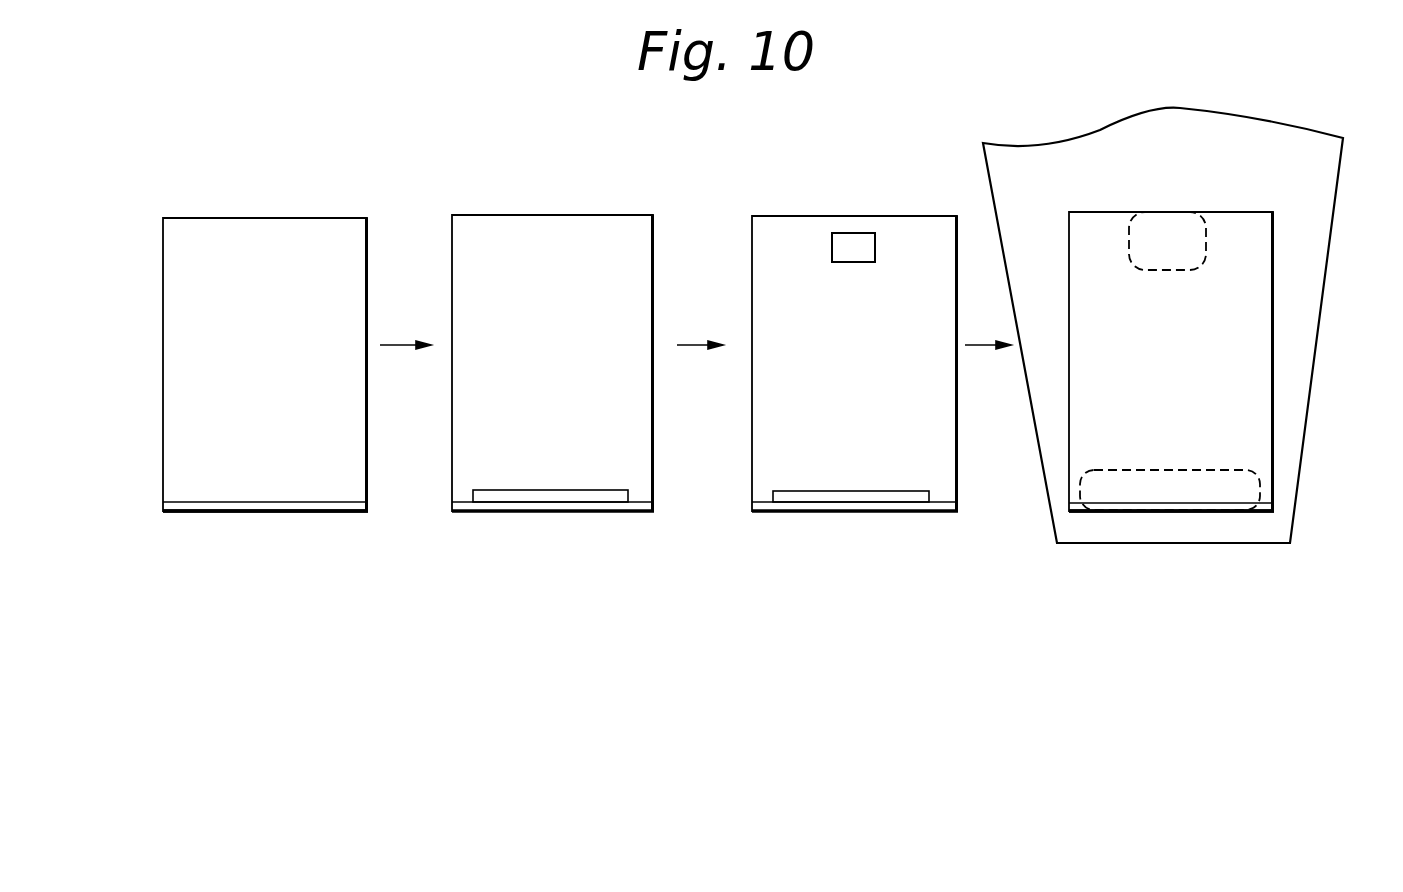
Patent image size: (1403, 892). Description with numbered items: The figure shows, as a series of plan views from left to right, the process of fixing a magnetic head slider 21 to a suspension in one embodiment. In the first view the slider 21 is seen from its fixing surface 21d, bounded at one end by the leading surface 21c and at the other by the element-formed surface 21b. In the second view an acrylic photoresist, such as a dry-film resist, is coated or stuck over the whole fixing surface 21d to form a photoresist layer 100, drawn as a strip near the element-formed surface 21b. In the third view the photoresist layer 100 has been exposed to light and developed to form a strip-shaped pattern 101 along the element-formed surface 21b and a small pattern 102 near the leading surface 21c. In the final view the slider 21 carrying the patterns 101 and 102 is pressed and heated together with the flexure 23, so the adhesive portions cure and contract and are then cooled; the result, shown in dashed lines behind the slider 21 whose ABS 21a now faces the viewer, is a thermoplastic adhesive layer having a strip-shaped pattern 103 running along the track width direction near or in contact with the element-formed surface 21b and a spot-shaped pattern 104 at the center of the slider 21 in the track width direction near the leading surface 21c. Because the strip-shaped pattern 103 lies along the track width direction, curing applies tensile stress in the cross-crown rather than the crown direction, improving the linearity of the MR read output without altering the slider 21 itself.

The magnetic head slider 21 is at (174, 471).
The ABS 21a is at (1202, 385).
The element-formed surface 21b is at (268, 514).
The leading surface 21c is at (262, 217).
The fixing surface 21d is at (290, 383).
The flexure 23 is at (1303, 277).
The photoresist layer 100 is at (468, 455).
The photoresist pattern 101 is at (780, 496).
The photoresist pattern 102 is at (853, 247).
The strip-shaped pattern 103 is at (1078, 485).
The spot-shaped pattern 104 is at (1133, 222).